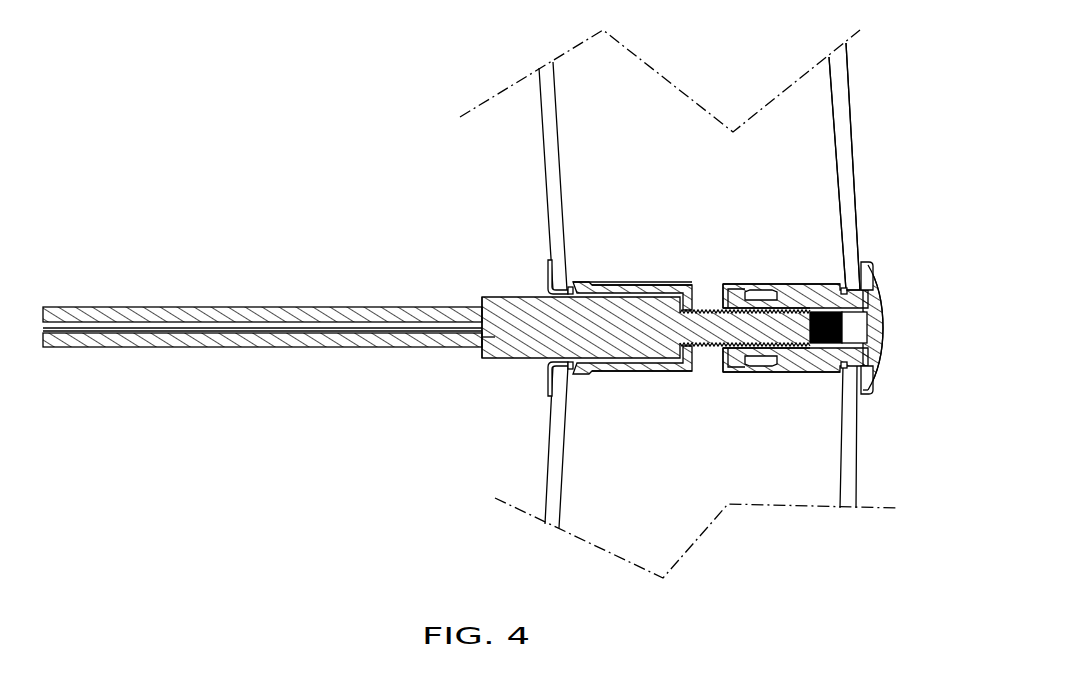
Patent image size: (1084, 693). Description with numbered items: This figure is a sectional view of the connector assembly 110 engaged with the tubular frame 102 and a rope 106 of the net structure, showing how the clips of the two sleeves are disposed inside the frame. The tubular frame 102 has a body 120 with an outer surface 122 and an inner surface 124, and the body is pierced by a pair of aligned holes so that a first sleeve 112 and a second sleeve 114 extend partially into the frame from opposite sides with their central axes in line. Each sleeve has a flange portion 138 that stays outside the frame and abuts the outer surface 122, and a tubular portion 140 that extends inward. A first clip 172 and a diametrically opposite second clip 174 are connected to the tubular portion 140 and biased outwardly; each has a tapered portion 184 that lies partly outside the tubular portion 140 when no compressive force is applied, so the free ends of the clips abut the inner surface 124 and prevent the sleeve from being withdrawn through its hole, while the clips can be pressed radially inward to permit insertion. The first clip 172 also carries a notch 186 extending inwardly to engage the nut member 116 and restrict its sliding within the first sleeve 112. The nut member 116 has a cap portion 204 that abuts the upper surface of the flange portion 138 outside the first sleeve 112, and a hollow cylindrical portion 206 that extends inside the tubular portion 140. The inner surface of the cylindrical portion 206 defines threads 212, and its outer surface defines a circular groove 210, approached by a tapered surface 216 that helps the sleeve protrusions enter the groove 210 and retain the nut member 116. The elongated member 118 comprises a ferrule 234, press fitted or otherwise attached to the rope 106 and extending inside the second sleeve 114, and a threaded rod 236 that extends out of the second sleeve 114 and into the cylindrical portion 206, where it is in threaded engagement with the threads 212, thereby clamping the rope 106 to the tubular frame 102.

The tubular frame 102 is at (851, 95).
The rope 106 is at (208, 349).
The connector assembly 110 is at (868, 236).
The first sleeve 112 is at (760, 275).
The second sleeve 114 is at (615, 274).
The nut member 116 is at (893, 302).
The elongated member 118 is at (504, 366).
The body 120 is at (840, 73).
The outer surface 122 is at (852, 130).
The inner surface 124 is at (558, 108).
The flange portion 138 is at (548, 263).
The tubular portion 140 is at (673, 373).
The first clip 172 is at (604, 373).
The second clip 174 is at (575, 282).
The tapered portion 184 is at (572, 369).
The notch 186 is at (588, 357).
The cap portion 204 is at (862, 375).
The hollow cylindrical portion 206 is at (787, 353).
The groove 210 is at (752, 292).
The threads 212 is at (812, 311).
The tapered surface 216 is at (736, 291).
The ferrule 234 is at (495, 337).
The threaded rod 236 is at (698, 290).